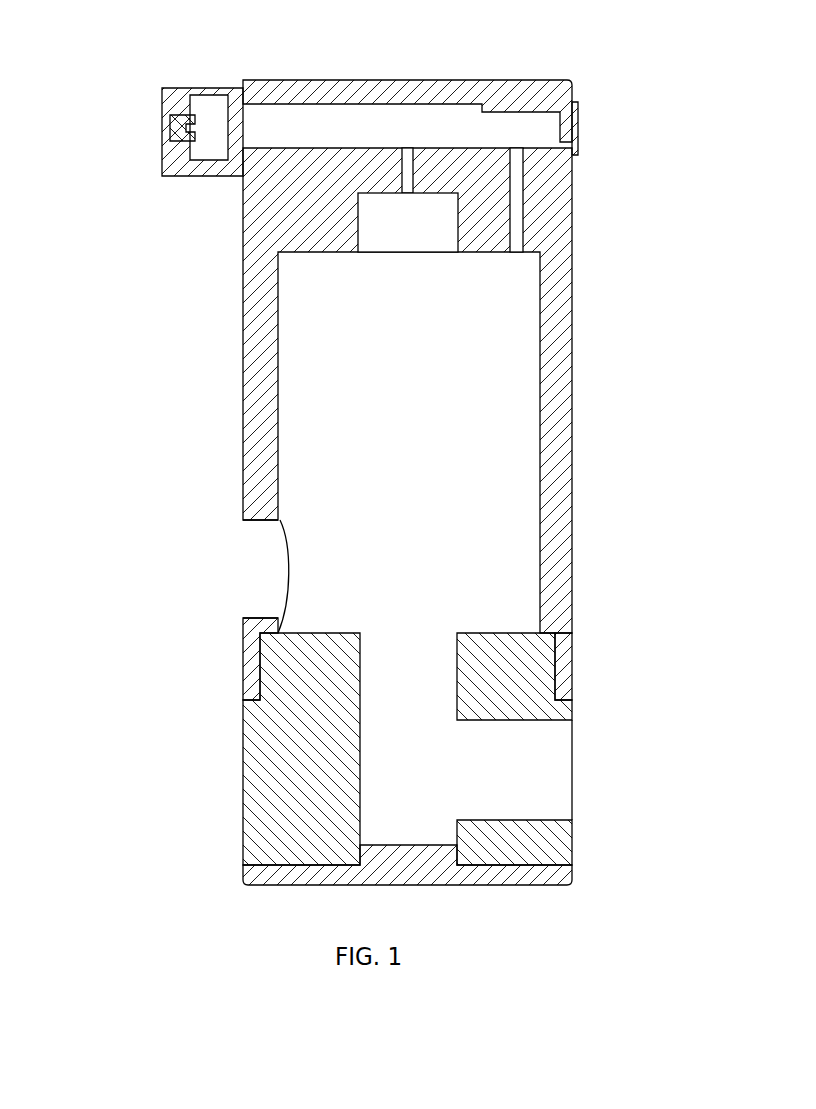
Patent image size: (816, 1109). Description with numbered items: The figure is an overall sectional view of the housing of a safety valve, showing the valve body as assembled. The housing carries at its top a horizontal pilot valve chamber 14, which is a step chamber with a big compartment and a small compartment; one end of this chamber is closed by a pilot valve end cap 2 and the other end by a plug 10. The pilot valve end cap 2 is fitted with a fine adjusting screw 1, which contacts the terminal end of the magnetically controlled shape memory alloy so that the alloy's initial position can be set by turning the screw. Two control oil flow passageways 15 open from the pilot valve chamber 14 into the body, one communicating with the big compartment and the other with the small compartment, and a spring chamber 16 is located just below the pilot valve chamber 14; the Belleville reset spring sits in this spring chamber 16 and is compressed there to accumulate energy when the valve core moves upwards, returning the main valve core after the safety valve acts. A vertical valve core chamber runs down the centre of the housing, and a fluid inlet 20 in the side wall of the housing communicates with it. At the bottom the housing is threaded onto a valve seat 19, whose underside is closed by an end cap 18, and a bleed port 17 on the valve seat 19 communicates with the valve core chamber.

The fine adjusting screw 1 is at (149, 121).
The pilot valve end cap 2 is at (125, 145).
The plug 10 is at (593, 138).
The pilot valve chamber 14 is at (234, 97).
The control oil flow passageway 15 is at (539, 236).
The spring chamber 16 is at (426, 242).
The bleed port 17 is at (585, 756).
The end cap 18 is at (233, 863).
The valve seat 19 is at (233, 740).
The fluid inlet 20 is at (246, 541).